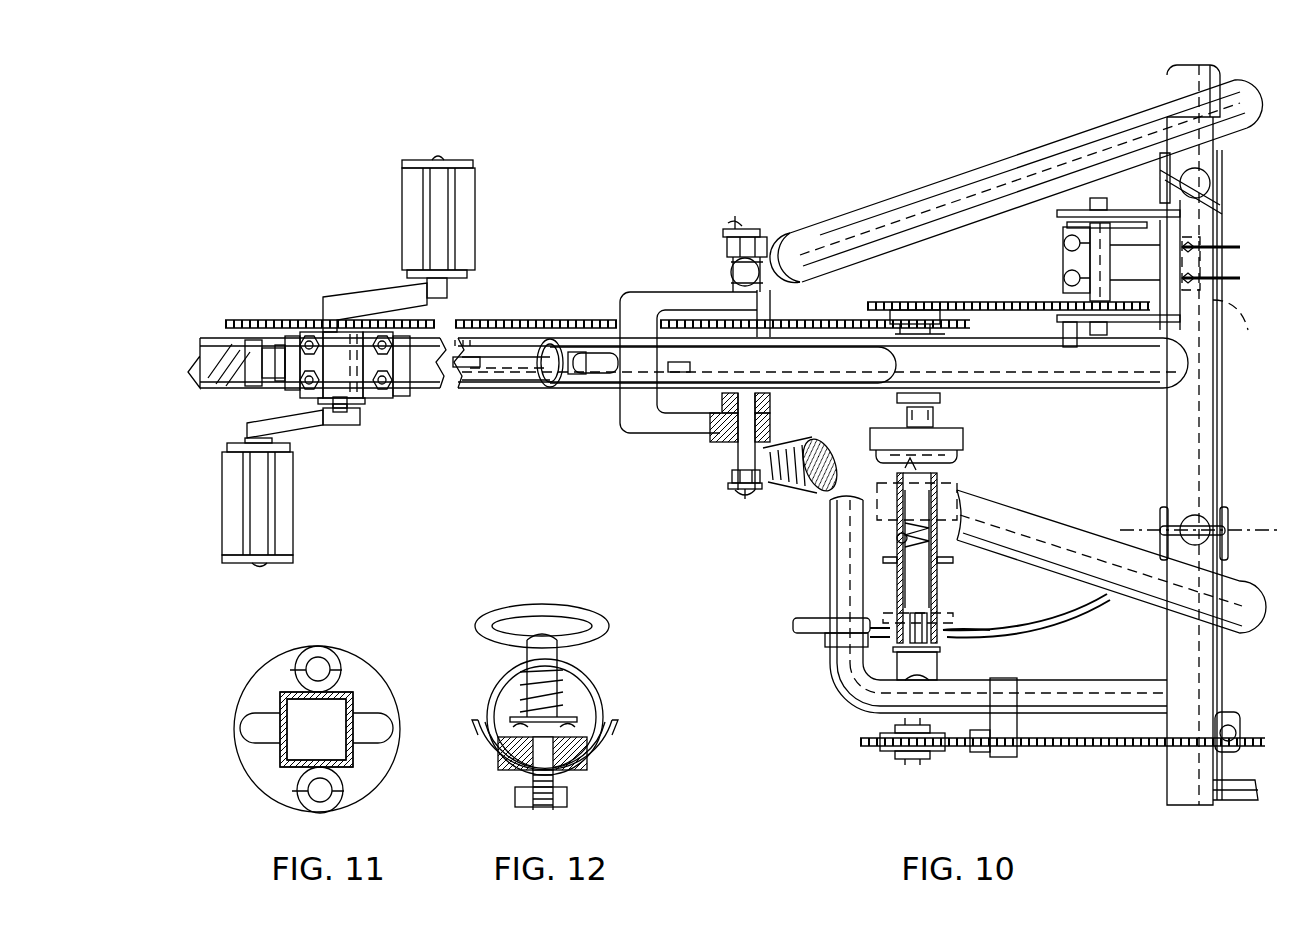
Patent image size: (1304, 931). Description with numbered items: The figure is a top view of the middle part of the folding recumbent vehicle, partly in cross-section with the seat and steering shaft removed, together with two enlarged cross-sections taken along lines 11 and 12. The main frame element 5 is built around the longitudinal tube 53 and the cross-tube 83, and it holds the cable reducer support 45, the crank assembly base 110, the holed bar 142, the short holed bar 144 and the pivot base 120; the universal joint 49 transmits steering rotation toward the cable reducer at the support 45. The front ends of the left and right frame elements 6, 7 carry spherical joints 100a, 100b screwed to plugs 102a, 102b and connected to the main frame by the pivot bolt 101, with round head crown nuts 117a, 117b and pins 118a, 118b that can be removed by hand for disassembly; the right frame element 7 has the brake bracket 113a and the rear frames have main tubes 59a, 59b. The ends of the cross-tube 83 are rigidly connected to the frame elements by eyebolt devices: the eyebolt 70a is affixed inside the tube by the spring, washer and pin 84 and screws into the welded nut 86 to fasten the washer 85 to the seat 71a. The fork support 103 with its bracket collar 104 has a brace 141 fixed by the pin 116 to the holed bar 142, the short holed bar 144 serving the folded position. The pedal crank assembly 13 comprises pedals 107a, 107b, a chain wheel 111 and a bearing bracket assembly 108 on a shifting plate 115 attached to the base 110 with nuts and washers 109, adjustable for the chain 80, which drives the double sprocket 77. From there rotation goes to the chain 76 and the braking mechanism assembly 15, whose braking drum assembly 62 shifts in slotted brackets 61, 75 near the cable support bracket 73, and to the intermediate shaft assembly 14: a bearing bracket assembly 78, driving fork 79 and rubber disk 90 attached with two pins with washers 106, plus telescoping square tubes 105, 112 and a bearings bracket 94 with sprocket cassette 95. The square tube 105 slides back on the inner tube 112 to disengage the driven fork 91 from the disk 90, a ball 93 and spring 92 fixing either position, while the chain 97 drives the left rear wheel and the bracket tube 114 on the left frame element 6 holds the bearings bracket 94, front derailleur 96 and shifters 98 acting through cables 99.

In FIG. 10, the main frame element 5 is at (496, 478).
In FIG. 10, the left frame element 6 is at (835, 708).
In FIG. 10, the right frame element 7 is at (950, 150).
In FIG. 10, the section line 11- 11 is at (870, 476).
In FIG. 10, the section line 12- 12 is at (1128, 528).
In FIG. 10, the pedal crank assembly 13 is at (338, 232).
In FIG. 10, the intermediate shaft assembly 14 is at (915, 770).
In FIG. 10, the braking mechanism assembly 15 is at (1118, 196).
In FIG. 10, the cable reducer support 45 is at (212, 352).
In FIG. 10, the universal joint 49 is at (276, 382).
In FIG. 10, the longitudinal tube 53 is at (520, 344).
In FIG. 10, the main tube 59a is at (1020, 522).
In FIG. 10, the main tube 59b is at (980, 158).
In FIG. 10, the slotted bracket 61 is at (1064, 243).
In FIG. 10, the braking drum assembly 62 is at (1094, 262).
In FIG. 10, the eyebolt 70a is at (1180, 530).
In FIG. 12, the eyebolt 70a is at (596, 630).
In FIG. 10, the seat 71a is at (1162, 512).
In FIG. 12, the seat 71a is at (590, 770).
In FIG. 10, the cable support bracket 73 is at (1221, 292).
In FIG. 10, the slotted bracket 75 is at (1140, 308).
In FIG. 10, the chain 76 is at (1000, 303).
In FIG. 10, the double sprocket 77 is at (917, 304).
In FIG. 10, the bearing bracket assembly 78 is at (898, 400).
In FIG. 10, the driving fork 79 is at (925, 410).
In FIG. 10, the chain 80 is at (577, 320).
In FIG. 10, the cross-tube 83 is at (1175, 453).
In FIG. 12, the spring, washer and pin 84 is at (512, 718).
In FIG. 12, the washer 85 is at (570, 748).
In FIG. 12, the welded nut 86 is at (560, 800).
In FIG. 10, the rubber disk 90 is at (958, 440).
In FIG. 11, the rubber disk 90 is at (260, 760).
In FIG. 10, the driven fork 91 is at (950, 455).
In FIG. 11, the driven fork 91 is at (260, 724).
In FIG. 10, the spring 92 is at (875, 520).
In FIG. 10, the ball 93 is at (898, 540).
In FIG. 10, the bearings bracket 94 is at (922, 666).
In FIG. 10, the sprocket cassette 95 is at (930, 758).
In FIG. 10, the front derailleur 96 is at (982, 752).
In FIG. 10, the chain 97 is at (1050, 750).
In FIG. 10, the shifters 98 is at (833, 628).
In FIG. 10, the cables 99 is at (1030, 648).
In FIG. 10, the spherical joint 100a is at (730, 462).
In FIG. 10, the spherical joint 100b is at (735, 248).
In FIG. 10, the pivot bolt 101 is at (744, 437).
In FIG. 10, the plug 102a is at (790, 475).
In FIG. 10, the plug 102b is at (780, 258).
In FIG. 10, the fork support 103 is at (628, 406).
In FIG. 10, the bracket collar 104 is at (590, 366).
In FIG. 10, the square tube 105 is at (940, 548).
In FIG. 11, the square tube 105 is at (285, 695).
In FIG. 11, the pins with washers 106 is at (308, 800).
In FIG. 10, the pedal 107a is at (290, 512).
In FIG. 10, the pedal 107b is at (410, 235).
In FIG. 10, the bearing bracket assembly 108 is at (334, 347).
In FIG. 10, the nuts and washers 109 is at (313, 430).
In FIG. 10, the crank assembly base 110 is at (402, 385).
In FIG. 10, the chain wheel 111 is at (272, 318).
In FIG. 10, the inner tube 112 is at (932, 597).
In FIG. 10, the brake bracket 113a is at (1230, 716).
In FIG. 10, the bracket tube 114 is at (870, 702).
In FIG. 10, the shifting plate 115 is at (380, 392).
In FIG. 10, the pin 116 is at (485, 370).
In FIG. 10, the round head crown nut 117a is at (730, 486).
In FIG. 10, the round head crown nut 117b is at (728, 233).
In FIG. 10, the pin 118a is at (735, 494).
In FIG. 10, the pin 118b is at (732, 224).
In FIG. 10, the pivot base 120 is at (765, 402).
In FIG. 10, the brace 141 is at (490, 347).
In FIG. 10, the holed bar 142 is at (462, 368).
In FIG. 10, the short holed bar 144 is at (679, 374).